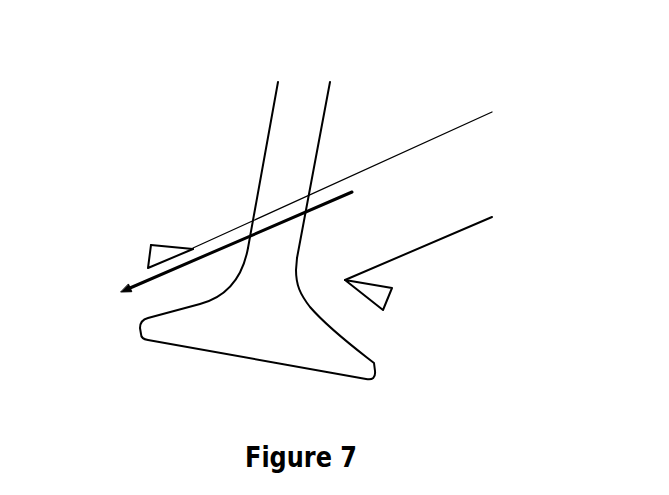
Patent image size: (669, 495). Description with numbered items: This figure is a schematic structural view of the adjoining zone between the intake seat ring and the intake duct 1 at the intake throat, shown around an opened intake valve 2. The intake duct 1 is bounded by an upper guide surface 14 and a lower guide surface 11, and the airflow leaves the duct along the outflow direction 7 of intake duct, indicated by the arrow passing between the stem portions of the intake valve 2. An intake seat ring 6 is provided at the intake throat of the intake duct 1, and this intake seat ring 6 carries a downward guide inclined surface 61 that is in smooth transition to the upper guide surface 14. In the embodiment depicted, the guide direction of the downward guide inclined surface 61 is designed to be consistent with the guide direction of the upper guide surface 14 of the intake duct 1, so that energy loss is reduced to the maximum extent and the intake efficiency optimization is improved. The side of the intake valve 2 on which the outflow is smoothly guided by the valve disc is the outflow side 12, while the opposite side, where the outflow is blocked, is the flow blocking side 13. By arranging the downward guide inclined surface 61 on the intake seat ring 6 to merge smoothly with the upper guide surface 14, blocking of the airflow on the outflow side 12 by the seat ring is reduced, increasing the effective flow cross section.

The intake duct 1 is at (327, 185).
The intake valve 2 is at (190, 227).
The intake seat ring 6 is at (126, 187).
The downward guide inclined surface 61 is at (170, 245).
The outflow direction of intake duct 7 is at (140, 278).
The lower guide surface 11 is at (433, 245).
The outflow side 12 is at (185, 287).
The flow blocking side 13 is at (333, 307).
The upper guide surface 14 is at (368, 160).